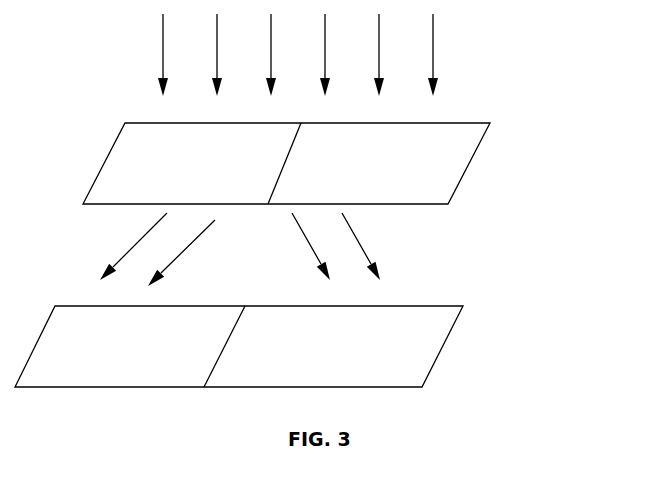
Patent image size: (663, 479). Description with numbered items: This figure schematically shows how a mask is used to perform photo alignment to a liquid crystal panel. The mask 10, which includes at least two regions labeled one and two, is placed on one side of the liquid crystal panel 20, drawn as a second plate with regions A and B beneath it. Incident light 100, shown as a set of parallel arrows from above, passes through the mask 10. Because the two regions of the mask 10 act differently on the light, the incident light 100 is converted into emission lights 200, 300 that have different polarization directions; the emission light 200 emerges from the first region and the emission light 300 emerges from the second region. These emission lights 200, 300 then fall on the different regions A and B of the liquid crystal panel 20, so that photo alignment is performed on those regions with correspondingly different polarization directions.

The incident light 100 is at (447, 38).
The mask 10 is at (472, 162).
The emission light 200 is at (125, 225).
The emission light 300 is at (378, 241).
The liquid crystal panel 20 is at (443, 346).